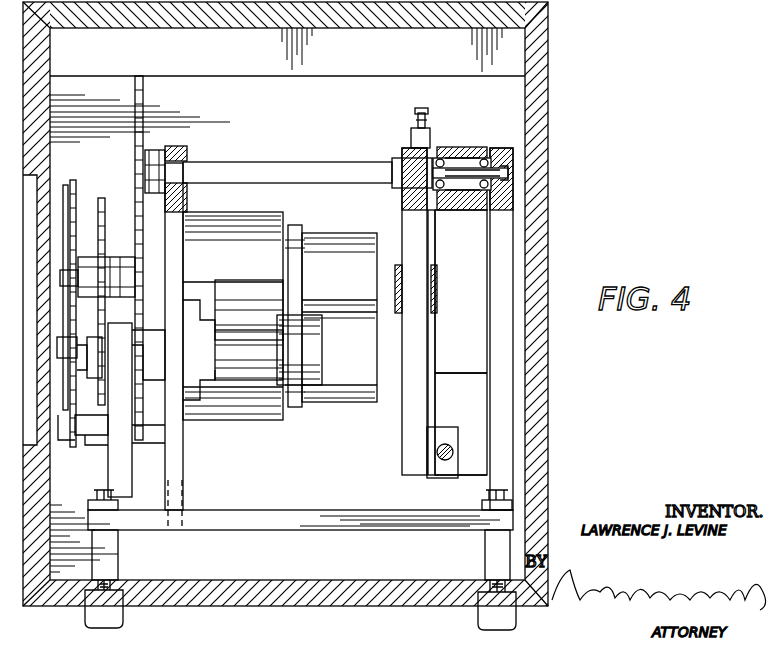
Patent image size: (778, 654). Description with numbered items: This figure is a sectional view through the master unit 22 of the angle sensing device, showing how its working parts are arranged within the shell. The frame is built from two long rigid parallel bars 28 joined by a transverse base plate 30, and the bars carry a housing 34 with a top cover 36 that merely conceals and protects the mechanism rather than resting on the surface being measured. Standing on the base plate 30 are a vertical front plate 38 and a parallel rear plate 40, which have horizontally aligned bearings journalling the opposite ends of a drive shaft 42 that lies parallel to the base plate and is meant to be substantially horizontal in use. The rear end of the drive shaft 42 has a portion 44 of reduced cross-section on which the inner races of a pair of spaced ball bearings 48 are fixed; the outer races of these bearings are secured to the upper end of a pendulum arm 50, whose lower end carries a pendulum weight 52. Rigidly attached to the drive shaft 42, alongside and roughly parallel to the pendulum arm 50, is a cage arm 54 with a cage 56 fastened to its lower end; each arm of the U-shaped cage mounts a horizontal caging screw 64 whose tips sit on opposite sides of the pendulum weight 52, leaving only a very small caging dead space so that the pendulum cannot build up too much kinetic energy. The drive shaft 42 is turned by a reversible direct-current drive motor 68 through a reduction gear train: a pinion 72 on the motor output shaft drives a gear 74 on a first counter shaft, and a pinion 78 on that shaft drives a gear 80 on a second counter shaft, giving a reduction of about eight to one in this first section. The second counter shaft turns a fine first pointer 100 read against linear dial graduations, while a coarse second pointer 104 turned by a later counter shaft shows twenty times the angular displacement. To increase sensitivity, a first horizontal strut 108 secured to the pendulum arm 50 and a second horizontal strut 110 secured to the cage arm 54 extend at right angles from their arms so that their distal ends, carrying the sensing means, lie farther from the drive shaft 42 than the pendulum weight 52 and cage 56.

The master unit 22 is at (576, 202).
The parallel bars 28 is at (118, 556).
The base plate 30 is at (325, 491).
The housing 34 is at (547, 368).
The top cover 36 is at (174, 346).
The front plate 38 is at (178, 247).
The rear plate 40 is at (506, 277).
The drive shaft 42 is at (292, 171).
The reduced cross-section portion 44 is at (476, 160).
The ball bearings 48 is at (452, 158).
The pendulum arm 50 is at (468, 172).
The pendulum weight 52 is at (475, 378).
The cage arm 54 is at (400, 336).
The cage 56 is at (445, 428).
The caging screw 64 is at (447, 468).
The drive motor 68 is at (310, 348).
The pinion 72 is at (143, 337).
The gear 74 is at (148, 400).
The pinion 78 is at (104, 396).
The gear 80 is at (100, 205).
The first pointer 100 is at (58, 415).
The second pointer 104 is at (66, 185).
The first horizontal strut 108 is at (437, 297).
The second horizontal strut 110 is at (396, 265).